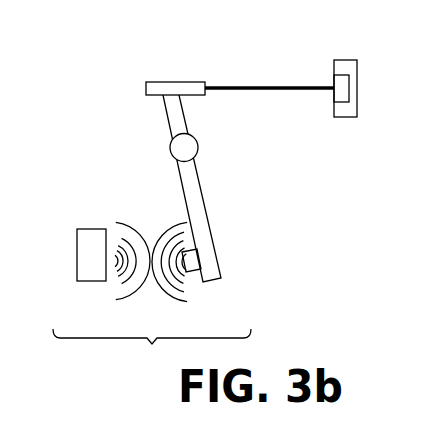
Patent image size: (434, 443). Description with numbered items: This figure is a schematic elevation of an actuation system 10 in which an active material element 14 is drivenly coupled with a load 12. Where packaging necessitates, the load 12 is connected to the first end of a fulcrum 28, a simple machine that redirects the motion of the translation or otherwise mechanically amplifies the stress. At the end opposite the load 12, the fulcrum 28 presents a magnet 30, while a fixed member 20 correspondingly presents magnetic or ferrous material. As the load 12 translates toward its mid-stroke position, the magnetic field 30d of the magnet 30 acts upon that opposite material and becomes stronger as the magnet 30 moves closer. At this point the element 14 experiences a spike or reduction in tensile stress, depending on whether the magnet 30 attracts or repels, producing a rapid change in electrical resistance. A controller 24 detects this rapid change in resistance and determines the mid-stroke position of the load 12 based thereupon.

The system 10 is at (120, 65).
The load 12 is at (177, 82).
The element 14 is at (307, 88).
The fixed member 20 is at (77, 259).
The controller 24 is at (350, 88).
The fulcrum 28 is at (170, 147).
The magnet 30 is at (194, 257).
The magnetic field 30d is at (190, 293).